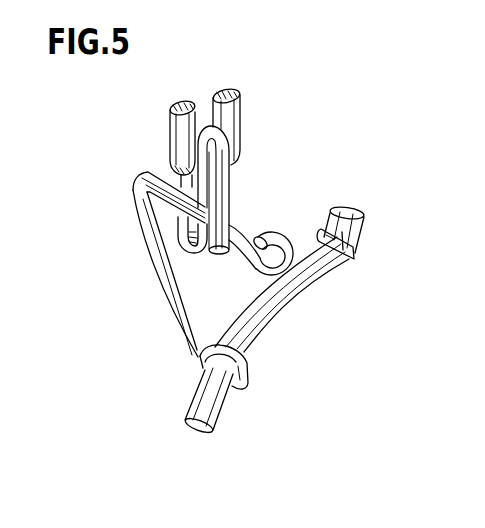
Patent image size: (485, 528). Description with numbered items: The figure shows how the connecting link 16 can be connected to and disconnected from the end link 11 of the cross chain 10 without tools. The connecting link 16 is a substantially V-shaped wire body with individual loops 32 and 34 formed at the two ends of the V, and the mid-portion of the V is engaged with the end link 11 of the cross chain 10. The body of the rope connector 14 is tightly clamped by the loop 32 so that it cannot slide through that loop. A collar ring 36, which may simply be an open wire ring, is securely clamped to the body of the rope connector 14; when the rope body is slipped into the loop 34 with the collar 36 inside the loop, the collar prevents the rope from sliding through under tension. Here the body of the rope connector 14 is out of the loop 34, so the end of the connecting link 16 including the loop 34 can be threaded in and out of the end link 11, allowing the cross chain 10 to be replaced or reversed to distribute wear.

The cross chain 10 is at (243, 122).
The end link 11 is at (229, 186).
The connecting link 16 is at (146, 238).
The loop 34 is at (278, 238).
The rope connector 14 is at (250, 334).
The collar ring 36 is at (358, 256).
The loop 32 is at (248, 374).